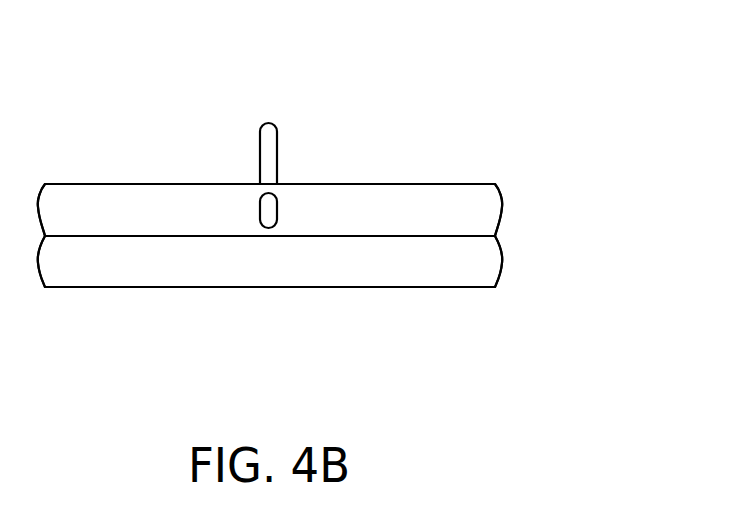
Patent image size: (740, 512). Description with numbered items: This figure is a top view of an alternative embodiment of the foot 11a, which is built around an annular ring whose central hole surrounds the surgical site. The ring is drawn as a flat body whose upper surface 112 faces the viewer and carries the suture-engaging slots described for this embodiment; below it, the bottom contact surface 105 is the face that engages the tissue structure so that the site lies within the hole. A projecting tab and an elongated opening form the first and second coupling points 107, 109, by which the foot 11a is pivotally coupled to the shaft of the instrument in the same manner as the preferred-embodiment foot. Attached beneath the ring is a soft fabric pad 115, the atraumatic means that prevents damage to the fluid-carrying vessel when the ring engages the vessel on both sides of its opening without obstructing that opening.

The foot 11a is at (584, 88).
The bottom contact surface 105 is at (378, 287).
The first coupling point 107 is at (277, 133).
The second coupling point 109 is at (268, 228).
The upper surface 112 is at (393, 184).
The soft fabric pad 115 is at (95, 287).